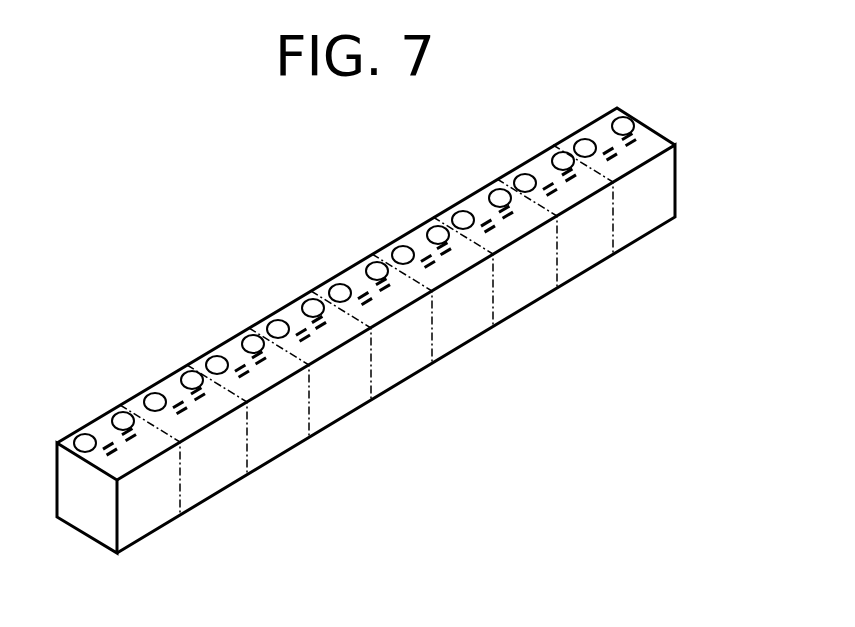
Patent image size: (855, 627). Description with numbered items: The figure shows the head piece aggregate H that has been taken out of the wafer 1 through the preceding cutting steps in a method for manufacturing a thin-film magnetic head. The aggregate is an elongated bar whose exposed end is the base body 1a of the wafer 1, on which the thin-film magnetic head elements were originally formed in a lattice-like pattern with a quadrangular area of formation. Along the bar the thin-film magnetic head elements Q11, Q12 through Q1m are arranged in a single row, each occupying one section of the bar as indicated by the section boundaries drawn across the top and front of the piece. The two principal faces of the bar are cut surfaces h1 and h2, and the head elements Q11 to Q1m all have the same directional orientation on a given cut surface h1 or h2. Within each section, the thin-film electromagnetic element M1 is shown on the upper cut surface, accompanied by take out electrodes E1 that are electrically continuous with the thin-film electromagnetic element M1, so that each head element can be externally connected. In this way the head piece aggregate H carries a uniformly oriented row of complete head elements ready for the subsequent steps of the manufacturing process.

The head piece aggregate H is at (653, 113).
The wafer 1 is at (493, 344).
The base body 1a is at (78, 503).
The cut surface h1 is at (400, 363).
The cut surface h2 is at (200, 358).
The thin-film magnetic head element Q11 is at (133, 450).
The thin-film magnetic head element Q12 is at (215, 403).
The thin-film magnetic head element Q1m is at (628, 155).
The thin-film electromagnetic element M1 is at (277, 327).
The take out electrodes E1 is at (362, 296).